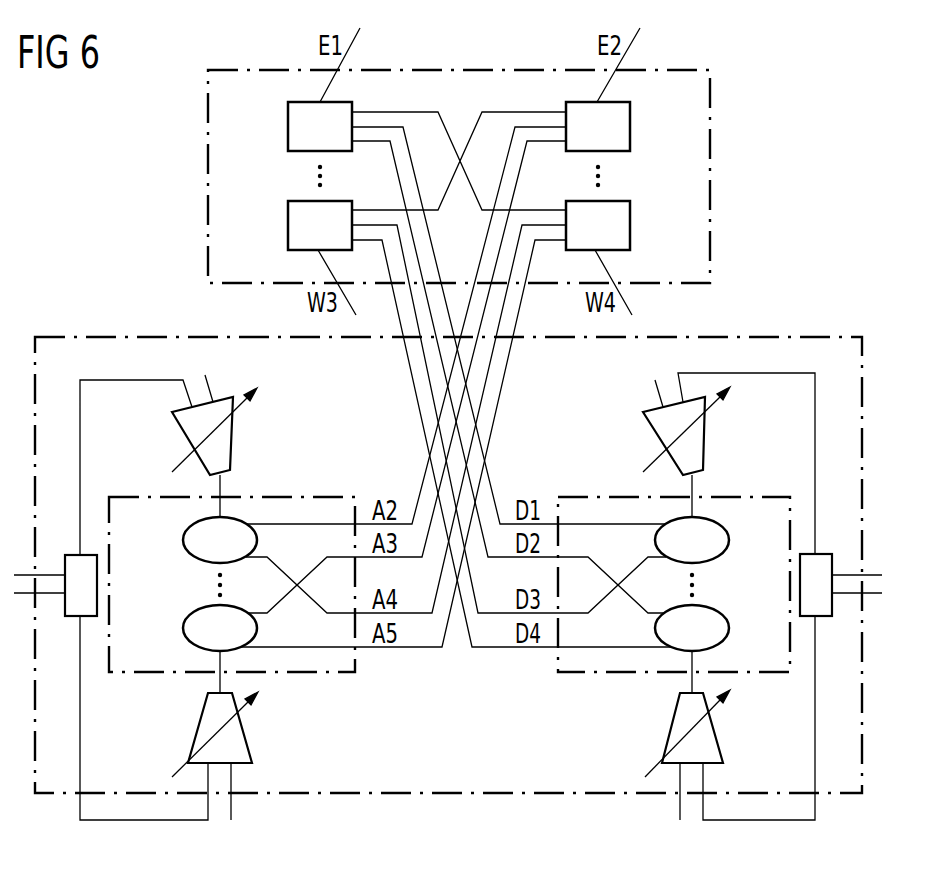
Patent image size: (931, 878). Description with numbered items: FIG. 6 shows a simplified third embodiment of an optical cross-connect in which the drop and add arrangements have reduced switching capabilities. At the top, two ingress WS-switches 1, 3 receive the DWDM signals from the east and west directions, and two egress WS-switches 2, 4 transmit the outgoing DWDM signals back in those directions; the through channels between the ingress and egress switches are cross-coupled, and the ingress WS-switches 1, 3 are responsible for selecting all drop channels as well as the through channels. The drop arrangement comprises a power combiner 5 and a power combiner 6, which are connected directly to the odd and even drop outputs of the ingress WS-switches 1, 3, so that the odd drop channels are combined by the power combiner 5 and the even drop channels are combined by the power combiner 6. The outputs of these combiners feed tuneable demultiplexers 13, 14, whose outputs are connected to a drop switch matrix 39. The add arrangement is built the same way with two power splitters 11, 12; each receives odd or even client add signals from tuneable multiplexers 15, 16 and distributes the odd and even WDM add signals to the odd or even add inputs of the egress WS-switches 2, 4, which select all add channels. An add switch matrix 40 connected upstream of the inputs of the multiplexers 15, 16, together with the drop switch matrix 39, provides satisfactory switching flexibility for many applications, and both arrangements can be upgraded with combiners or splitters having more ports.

The ingress WS-switch 1 is at (288, 126).
The egress WS-switch 2 is at (630, 126).
The ingress WS-switch 3 is at (288, 225).
The egress WS-switch 4 is at (630, 225).
The power combiner 5 is at (729, 540).
The power combiner 6 is at (729, 628).
The power splitter 11 is at (183, 540).
The power splitter 12 is at (183, 628).
The tuneable demultiplexer 13 is at (705, 432).
The tuneable demultiplexer 14 is at (671, 728).
The tuneable multiplexer 15 is at (233, 432).
The tuneable multiplexer 16 is at (248, 740).
The drop switch matrix 39 is at (822, 616).
The add switch matrix 40 is at (72, 616).